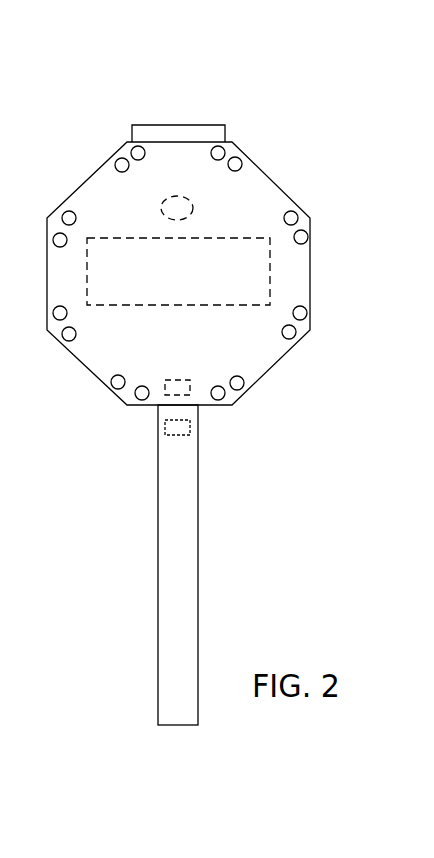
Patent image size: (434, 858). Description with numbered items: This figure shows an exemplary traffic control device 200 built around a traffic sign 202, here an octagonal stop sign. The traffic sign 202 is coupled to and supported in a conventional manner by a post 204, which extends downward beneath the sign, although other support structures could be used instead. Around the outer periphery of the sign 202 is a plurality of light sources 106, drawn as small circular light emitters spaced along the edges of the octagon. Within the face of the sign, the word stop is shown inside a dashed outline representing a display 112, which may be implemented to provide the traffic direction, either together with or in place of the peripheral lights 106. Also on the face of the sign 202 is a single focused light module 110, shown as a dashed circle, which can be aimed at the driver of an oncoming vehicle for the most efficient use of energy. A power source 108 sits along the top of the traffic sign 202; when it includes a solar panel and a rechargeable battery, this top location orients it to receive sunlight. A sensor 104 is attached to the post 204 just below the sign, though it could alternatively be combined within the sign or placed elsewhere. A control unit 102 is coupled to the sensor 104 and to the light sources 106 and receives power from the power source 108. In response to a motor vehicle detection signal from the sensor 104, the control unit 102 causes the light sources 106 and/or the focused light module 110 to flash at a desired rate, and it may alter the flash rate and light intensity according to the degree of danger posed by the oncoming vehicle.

The traffic control device 200 is at (362, 121).
The traffic sign 202 is at (107, 178).
The post 204 is at (165, 583).
The light sources 106 is at (306, 237).
The power source 108 is at (202, 135).
The focused light module 110 is at (192, 210).
The display 112 is at (270, 288).
The control unit 102 is at (173, 392).
The sensor 104 is at (183, 429).